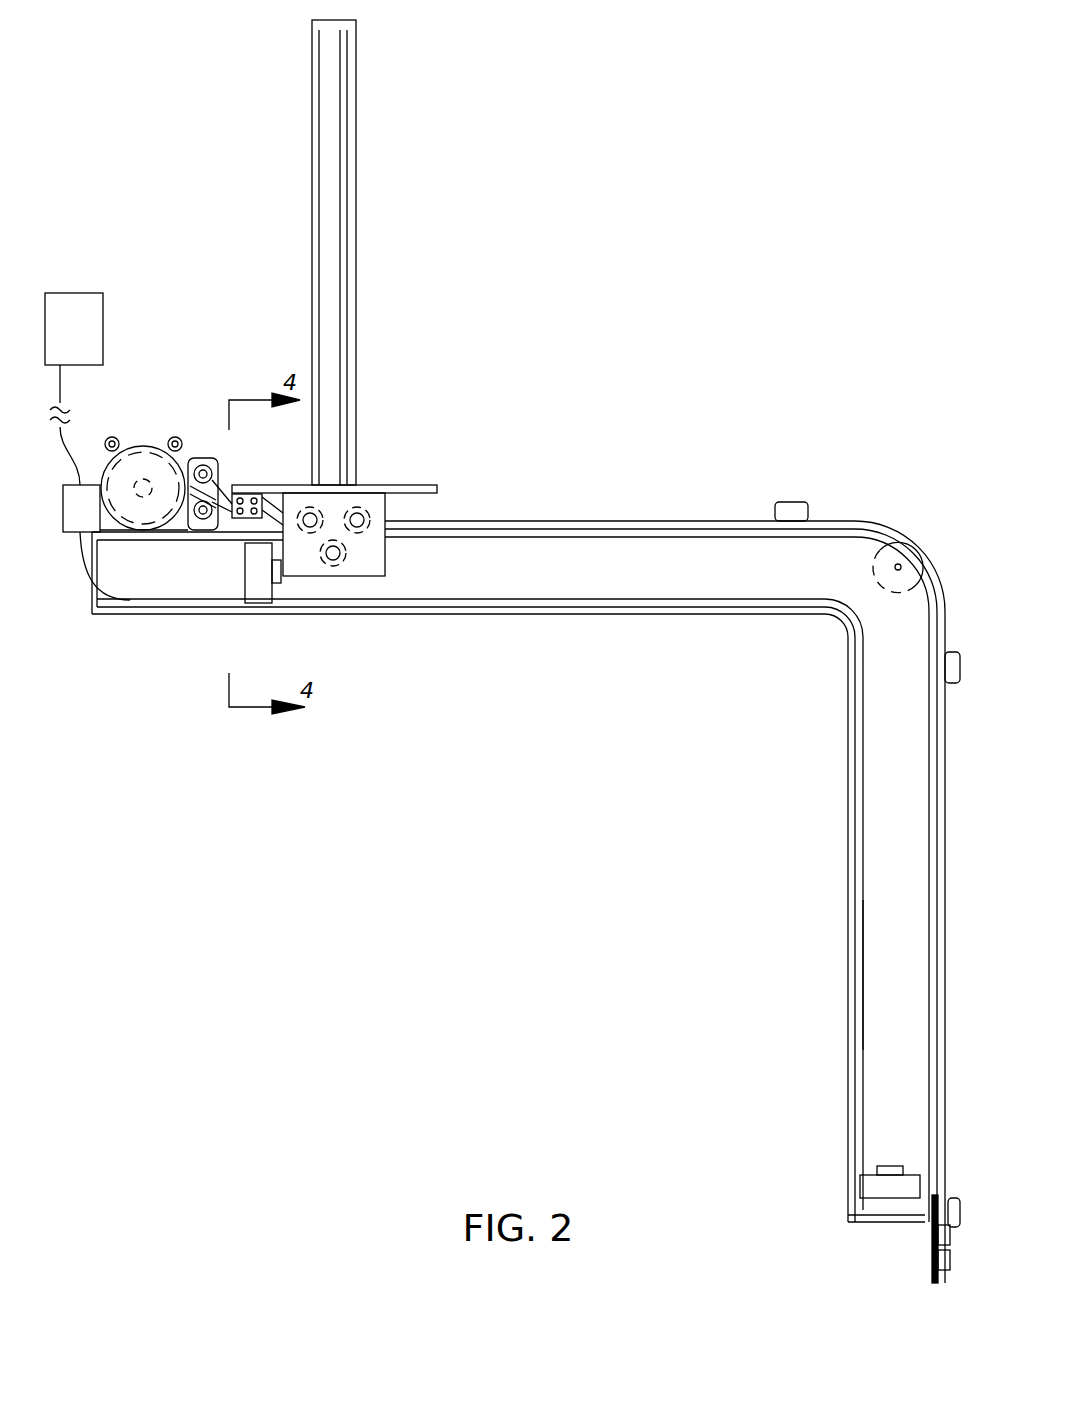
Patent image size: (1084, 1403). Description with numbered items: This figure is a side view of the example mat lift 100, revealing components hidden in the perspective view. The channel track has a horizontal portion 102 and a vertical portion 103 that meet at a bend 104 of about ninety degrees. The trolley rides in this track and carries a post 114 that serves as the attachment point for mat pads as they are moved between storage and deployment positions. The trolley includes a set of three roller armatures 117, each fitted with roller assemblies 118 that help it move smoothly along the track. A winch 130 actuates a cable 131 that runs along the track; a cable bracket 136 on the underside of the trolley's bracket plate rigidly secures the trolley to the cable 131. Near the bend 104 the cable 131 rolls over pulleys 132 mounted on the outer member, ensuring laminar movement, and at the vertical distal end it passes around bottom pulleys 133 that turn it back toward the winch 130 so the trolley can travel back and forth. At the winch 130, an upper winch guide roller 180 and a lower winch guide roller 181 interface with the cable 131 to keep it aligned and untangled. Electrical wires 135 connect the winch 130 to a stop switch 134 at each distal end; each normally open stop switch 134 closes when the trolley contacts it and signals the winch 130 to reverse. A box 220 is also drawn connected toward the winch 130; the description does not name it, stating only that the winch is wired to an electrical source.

The mat lift 100 is at (732, 140).
The horizontal portion 102 is at (582, 617).
The vertical portion 103 is at (848, 908).
The bend 104 is at (843, 622).
The post 114 is at (356, 83).
The roller armatures 117 is at (382, 502).
The roller assemblies 118 is at (308, 527).
The winch 130 is at (142, 447).
The cable 131 is at (607, 520).
The pulleys 132 is at (907, 557).
The bottom pulleys 133 is at (935, 1230).
The stop switch 134 is at (252, 585).
The electrical wires 135 is at (863, 977).
The cable bracket 136 is at (243, 520).
The upper winch guide roller 180 is at (203, 440).
The lower winch guide roller 181 is at (223, 493).
The controller 220 is at (65, 268).